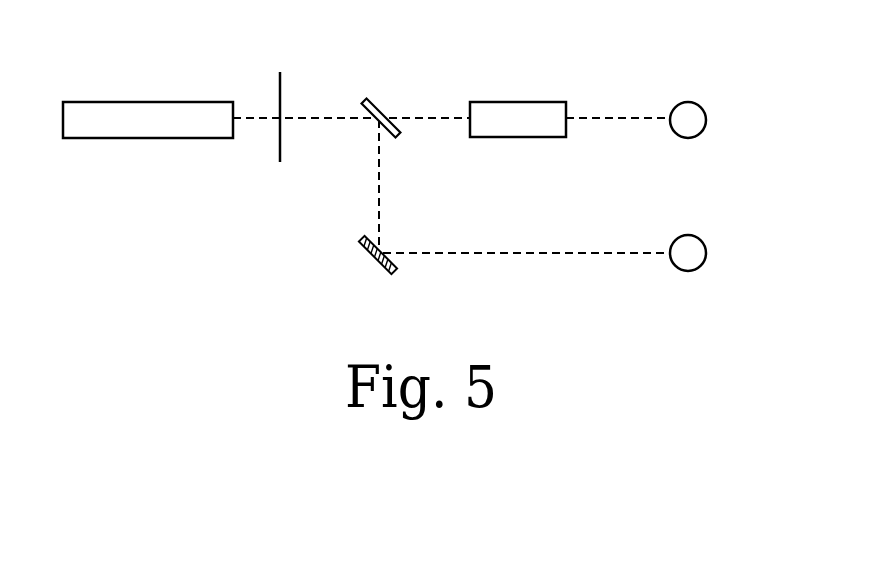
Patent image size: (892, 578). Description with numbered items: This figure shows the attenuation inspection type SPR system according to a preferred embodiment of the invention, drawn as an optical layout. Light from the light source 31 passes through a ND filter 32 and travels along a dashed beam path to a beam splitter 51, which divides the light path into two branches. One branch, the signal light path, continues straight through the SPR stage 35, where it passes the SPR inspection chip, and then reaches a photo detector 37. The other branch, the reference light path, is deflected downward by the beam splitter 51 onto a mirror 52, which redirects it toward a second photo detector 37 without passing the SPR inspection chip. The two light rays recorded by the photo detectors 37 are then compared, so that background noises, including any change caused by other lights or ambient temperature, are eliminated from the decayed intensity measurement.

The light source 31 is at (160, 107).
The ND filter 32 is at (280, 145).
The beam splitter 51 is at (380, 100).
The SPR stage 35 is at (528, 103).
The photo detector 37 is at (688, 102).
The mirror 52 is at (370, 255).